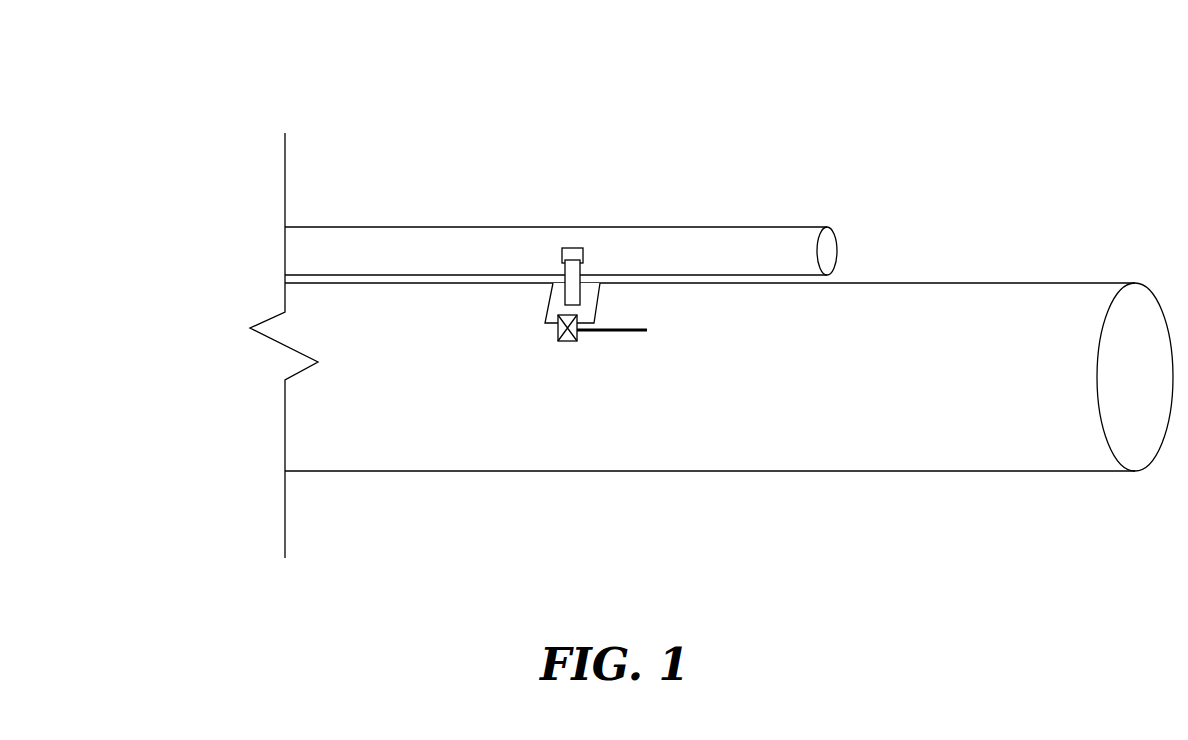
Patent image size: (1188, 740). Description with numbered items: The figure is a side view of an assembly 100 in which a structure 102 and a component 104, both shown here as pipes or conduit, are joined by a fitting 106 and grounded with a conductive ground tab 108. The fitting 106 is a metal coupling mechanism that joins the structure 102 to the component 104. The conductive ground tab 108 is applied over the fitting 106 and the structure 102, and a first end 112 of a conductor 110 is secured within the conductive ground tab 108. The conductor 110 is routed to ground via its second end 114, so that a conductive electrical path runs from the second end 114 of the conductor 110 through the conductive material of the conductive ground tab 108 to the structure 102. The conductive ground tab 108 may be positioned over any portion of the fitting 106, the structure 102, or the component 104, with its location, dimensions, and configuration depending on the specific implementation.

The sensor mounting system 100 is at (163, 60).
The structure 102 is at (1028, 300).
The component 104 is at (790, 240).
The fitting 106 is at (555, 298).
The conductive ground tab 108 is at (560, 332).
The conductor 110 is at (612, 333).
The first end 112 is at (572, 343).
The second end 114 is at (645, 328).